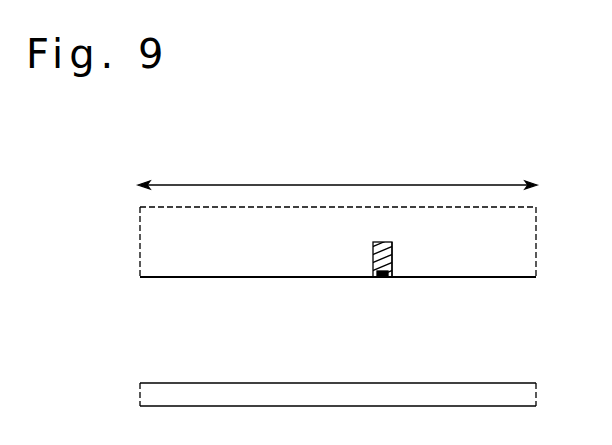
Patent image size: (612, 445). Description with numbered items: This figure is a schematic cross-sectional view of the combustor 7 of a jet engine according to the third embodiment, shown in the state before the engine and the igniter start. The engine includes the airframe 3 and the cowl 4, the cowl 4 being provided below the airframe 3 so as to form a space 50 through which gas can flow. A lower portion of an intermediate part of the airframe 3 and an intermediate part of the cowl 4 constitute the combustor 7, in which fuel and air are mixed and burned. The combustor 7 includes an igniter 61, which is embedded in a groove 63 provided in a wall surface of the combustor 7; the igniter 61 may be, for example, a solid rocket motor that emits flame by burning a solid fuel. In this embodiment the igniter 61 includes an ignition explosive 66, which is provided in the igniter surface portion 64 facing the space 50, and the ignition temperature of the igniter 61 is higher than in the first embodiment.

The combustor 7 is at (337, 172).
The airframe 3 is at (522, 268).
The cowl 4 is at (522, 398).
The space 50 is at (182, 347).
The igniter 61 is at (373, 248).
The groove 63 is at (392, 255).
The igniter surface portion 64 is at (373, 277).
The ignition explosive 66 is at (386, 278).